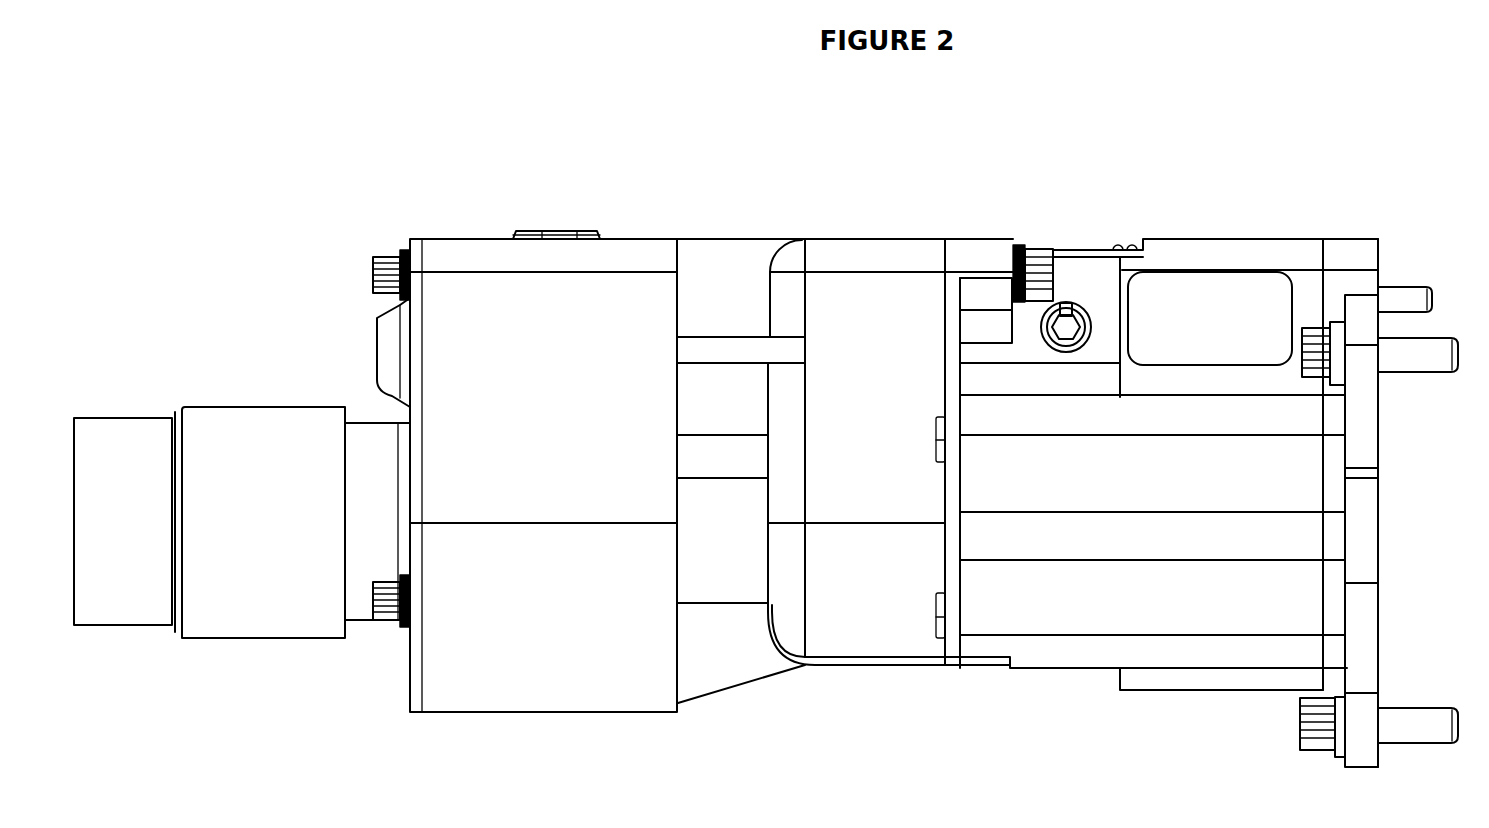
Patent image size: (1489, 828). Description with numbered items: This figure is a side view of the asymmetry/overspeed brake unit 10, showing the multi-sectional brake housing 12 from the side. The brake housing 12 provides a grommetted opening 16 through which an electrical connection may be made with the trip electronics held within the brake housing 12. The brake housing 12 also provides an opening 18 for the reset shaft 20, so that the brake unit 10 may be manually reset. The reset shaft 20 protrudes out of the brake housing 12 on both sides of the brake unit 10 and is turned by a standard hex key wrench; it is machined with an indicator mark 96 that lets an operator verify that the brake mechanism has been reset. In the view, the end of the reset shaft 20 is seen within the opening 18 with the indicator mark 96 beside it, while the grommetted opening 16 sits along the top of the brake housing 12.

The asymmetry/overspeed brake unit 10 is at (1157, 148).
The brake housing 12 is at (840, 288).
The grommetted opening 16 is at (568, 228).
The opening 18 is at (1068, 353).
The reset shaft 20 is at (1066, 328).
The indicator mark 96 is at (1068, 303).